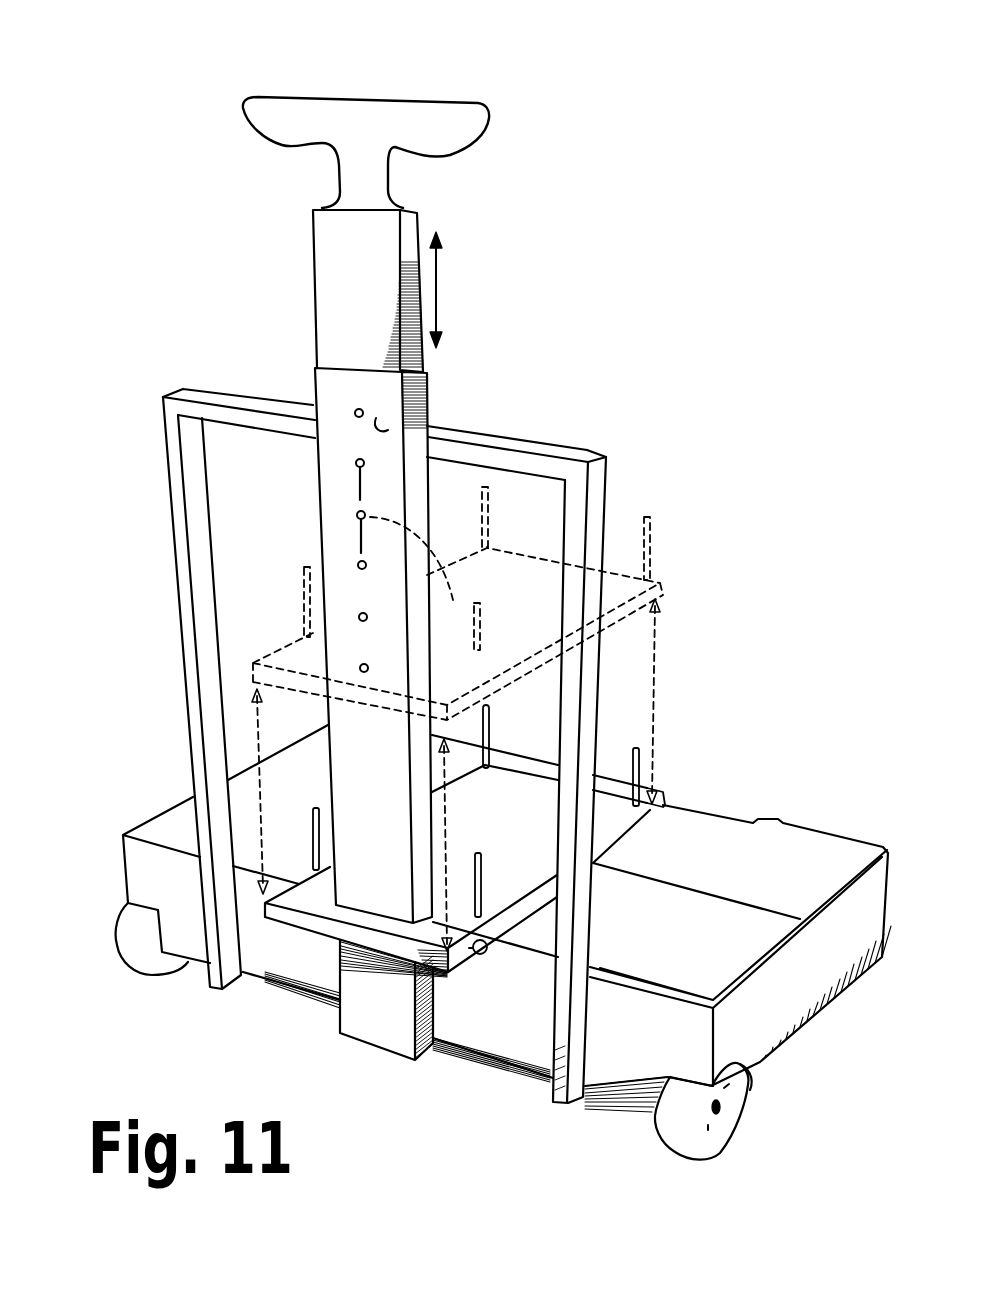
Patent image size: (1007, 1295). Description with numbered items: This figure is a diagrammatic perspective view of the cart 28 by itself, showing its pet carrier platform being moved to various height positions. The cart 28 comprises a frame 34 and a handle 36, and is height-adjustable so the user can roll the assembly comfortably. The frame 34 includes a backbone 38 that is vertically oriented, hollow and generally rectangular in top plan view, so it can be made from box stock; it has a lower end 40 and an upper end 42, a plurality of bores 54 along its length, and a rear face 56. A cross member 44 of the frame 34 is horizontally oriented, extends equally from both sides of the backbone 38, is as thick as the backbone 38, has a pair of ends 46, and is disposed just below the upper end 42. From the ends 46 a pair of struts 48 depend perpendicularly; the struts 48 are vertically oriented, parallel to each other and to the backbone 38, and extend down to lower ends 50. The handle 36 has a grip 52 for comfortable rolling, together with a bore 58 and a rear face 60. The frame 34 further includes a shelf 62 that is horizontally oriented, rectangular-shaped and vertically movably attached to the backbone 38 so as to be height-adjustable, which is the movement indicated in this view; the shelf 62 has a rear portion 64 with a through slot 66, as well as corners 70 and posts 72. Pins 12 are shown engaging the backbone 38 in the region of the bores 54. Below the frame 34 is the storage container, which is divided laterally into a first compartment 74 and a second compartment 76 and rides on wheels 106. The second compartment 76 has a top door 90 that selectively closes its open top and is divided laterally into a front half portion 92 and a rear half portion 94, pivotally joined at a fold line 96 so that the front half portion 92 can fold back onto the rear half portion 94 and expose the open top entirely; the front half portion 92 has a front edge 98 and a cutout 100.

The locking pins 12 is at (357, 486).
The cart 28 is at (271, 95).
The frame 34 is at (174, 628).
The handle 36 is at (418, 97).
The backbone 38 is at (313, 400).
The lower end 40 is at (380, 1047).
The upper end 42 is at (344, 368).
The cross member 44 is at (553, 445).
The ends 46 is at (163, 397).
The struts 48 is at (555, 822).
The lower ends 50 is at (213, 990).
The grip 52 is at (353, 97).
The bores 54 is at (366, 467).
The rear face 56 is at (392, 421).
The bore 58 is at (457, 719).
The rear face 60 is at (346, 256).
The shelf 62 is at (622, 832).
The rear portion 64 is at (320, 925).
The through slot 66 is at (398, 917).
The corners 70 is at (666, 800).
The posts 72 is at (632, 768).
The first compartment 74 is at (165, 819).
The second compartment 76 is at (886, 881).
The top door 90 is at (780, 922).
The front half portion 92 is at (812, 858).
The rear half portion 94 is at (718, 938).
The fold line 96 is at (683, 883).
The front edge 98 is at (868, 843).
The cutout 100 is at (750, 828).
The wheels 106 is at (117, 937).